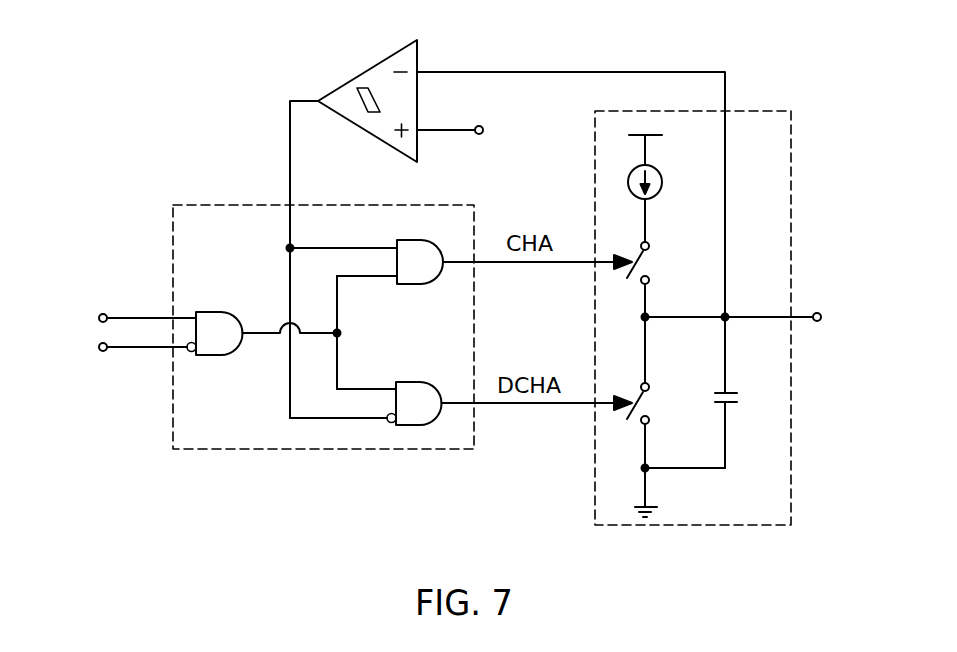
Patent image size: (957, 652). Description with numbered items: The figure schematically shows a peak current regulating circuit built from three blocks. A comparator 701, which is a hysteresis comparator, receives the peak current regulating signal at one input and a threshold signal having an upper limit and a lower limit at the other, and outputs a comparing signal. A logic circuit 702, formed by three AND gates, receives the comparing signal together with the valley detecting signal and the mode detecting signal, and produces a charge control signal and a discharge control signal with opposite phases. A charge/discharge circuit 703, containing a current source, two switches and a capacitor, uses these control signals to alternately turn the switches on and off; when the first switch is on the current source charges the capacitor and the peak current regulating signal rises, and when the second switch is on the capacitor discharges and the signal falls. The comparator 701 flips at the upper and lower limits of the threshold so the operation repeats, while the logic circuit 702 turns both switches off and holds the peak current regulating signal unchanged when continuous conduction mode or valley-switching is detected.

The comparator 701 is at (353, 78).
The logic circuit 702 is at (226, 204).
The charge/discharge circuit 703 is at (791, 111).